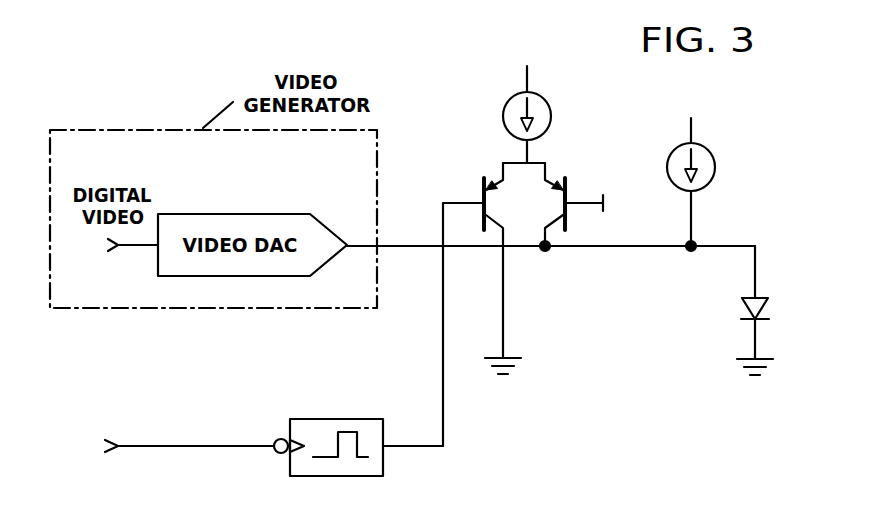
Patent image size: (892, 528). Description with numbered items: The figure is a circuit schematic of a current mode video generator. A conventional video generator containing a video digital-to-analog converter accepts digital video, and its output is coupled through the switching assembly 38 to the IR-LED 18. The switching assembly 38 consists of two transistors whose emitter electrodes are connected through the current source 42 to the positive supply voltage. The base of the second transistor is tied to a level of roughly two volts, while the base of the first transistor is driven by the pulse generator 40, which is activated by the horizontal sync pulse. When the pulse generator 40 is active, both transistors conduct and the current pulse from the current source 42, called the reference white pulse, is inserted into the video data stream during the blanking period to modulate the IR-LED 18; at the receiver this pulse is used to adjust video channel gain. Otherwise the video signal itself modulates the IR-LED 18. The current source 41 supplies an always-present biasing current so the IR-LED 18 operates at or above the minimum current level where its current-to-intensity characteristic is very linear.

The IR-LED 18 is at (780, 314).
The switching assembly 38 is at (477, 160).
The pulse generator 40 is at (332, 419).
The current source 41 is at (708, 152).
The current source 42 is at (509, 99).